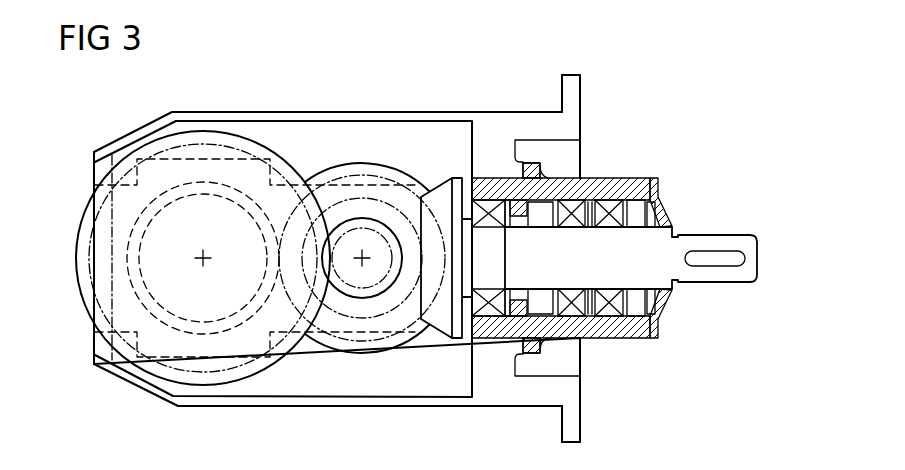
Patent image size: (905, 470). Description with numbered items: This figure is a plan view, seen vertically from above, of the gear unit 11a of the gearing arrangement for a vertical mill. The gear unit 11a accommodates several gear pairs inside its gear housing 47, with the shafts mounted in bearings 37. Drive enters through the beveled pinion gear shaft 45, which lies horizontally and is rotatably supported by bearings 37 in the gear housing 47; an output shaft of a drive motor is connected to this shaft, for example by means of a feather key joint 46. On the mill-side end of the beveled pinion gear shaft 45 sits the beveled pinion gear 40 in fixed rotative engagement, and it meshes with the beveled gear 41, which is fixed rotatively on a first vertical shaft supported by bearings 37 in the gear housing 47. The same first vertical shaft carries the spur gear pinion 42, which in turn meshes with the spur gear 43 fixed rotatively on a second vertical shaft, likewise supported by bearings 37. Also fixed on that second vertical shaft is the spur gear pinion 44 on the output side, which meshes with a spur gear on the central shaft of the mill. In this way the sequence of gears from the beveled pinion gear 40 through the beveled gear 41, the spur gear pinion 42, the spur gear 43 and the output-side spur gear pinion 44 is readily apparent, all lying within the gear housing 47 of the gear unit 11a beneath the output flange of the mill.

The gear unit 11a is at (480, 68).
The bearings 37 is at (487, 313).
The beveled pinion gear 40 is at (445, 203).
The beveled gear 41 is at (355, 350).
The spur gear pinion 42 is at (355, 217).
The spur gear 43 is at (235, 378).
The spur gear pinion on the output side 44 is at (218, 186).
The beveled pinion gear shaft 45 is at (708, 240).
The feather key joint 46 is at (718, 262).
The gear housing 47 is at (572, 90).